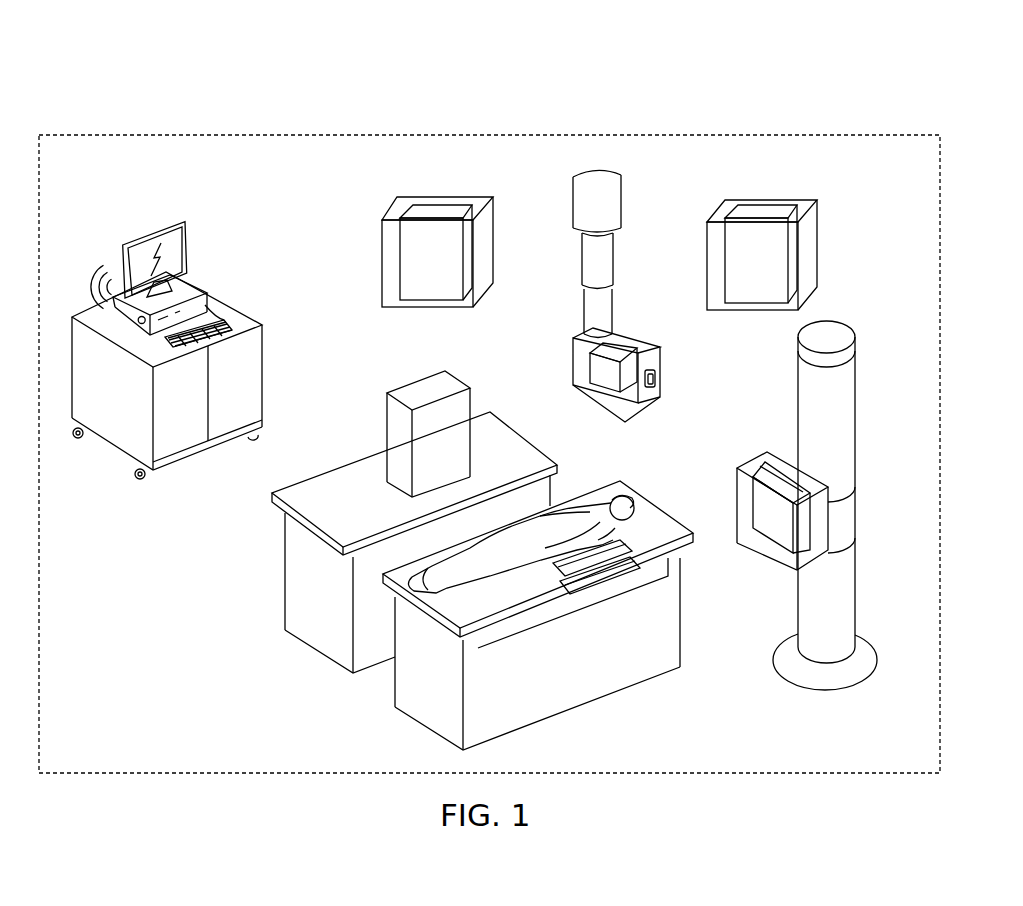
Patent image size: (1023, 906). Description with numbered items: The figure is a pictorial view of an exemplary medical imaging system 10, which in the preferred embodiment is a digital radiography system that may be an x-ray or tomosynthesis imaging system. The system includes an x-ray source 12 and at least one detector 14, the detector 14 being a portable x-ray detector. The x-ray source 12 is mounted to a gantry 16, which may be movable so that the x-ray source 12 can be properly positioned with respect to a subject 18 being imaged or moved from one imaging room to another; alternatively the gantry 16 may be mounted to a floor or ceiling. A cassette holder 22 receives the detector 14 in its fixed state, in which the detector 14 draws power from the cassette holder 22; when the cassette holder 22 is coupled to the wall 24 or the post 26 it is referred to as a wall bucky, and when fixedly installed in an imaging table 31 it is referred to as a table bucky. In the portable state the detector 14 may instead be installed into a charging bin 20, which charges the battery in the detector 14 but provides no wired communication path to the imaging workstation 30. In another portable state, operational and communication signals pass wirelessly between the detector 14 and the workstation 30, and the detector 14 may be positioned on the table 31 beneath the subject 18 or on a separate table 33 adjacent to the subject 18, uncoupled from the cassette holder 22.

The medical imaging system 10 is at (917, 126).
The x-ray source 12 is at (639, 418).
The detector 14 is at (437, 200).
The gantry 16 is at (612, 202).
The subject 18 is at (589, 497).
The charging bin 20 is at (810, 258).
The cassette holder 22 is at (485, 263).
The wall 24 is at (281, 233).
The post 26 is at (847, 604).
The imaging workstation 30 is at (265, 375).
The imaging table 31 is at (682, 611).
The separate table 33 is at (285, 568).